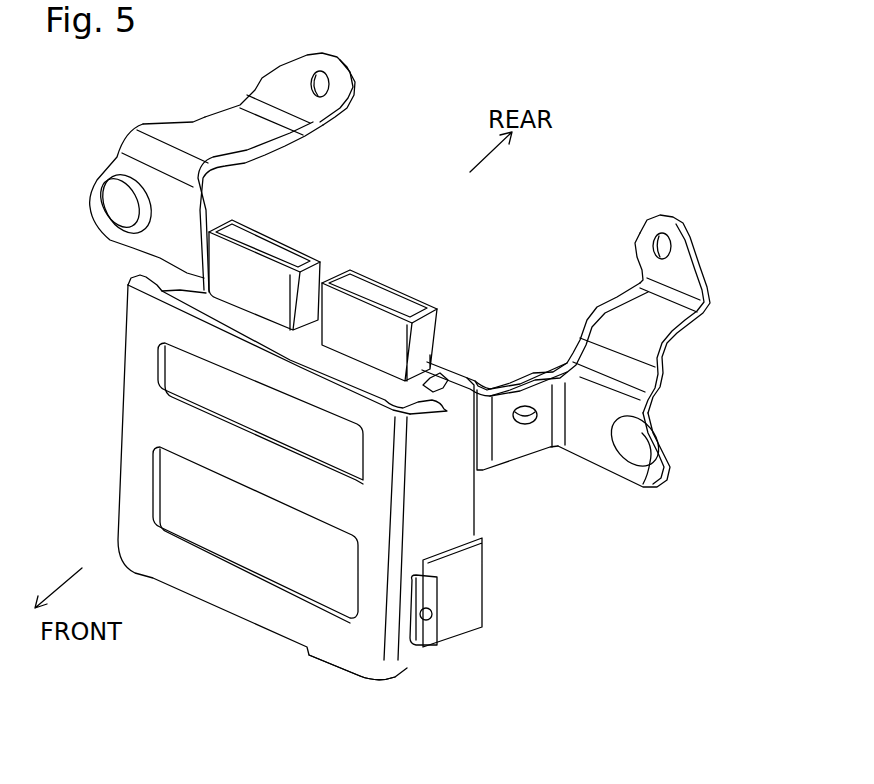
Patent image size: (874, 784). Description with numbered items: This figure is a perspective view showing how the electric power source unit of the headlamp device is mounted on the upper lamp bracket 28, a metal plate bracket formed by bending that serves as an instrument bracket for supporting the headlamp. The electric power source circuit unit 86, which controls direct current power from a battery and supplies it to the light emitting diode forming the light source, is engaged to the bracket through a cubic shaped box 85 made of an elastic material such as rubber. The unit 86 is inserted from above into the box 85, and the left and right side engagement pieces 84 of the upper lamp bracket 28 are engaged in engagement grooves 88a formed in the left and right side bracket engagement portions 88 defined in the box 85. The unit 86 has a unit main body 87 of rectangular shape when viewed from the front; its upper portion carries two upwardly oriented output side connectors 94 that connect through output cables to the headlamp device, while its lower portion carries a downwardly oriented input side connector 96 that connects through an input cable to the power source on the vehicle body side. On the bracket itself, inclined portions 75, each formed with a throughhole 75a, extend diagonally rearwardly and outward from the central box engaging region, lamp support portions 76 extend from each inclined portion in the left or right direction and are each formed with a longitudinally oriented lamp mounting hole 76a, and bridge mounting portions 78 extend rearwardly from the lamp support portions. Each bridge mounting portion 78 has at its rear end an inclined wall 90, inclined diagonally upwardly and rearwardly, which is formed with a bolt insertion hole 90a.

The upper lamp bracket 28 is at (393, 284).
The inclined portion 75 is at (520, 452).
The throughhole 75a is at (525, 408).
The lamp support portion 76 is at (150, 247).
The lamp mounting hole 76a is at (112, 222).
The bridge mounting portion 78 is at (205, 132).
The engagement piece 84 is at (418, 648).
The box 85 is at (247, 612).
The electric power source circuit unit 86 is at (427, 387).
The unit main body 87 is at (177, 488).
The bracket engagement portion 88 is at (467, 590).
The engagement groove 88a is at (427, 620).
The inclined wall 90 is at (290, 78).
The bolt insertion hole 90a is at (330, 86).
The output side connector 94 is at (358, 268).
The input side connector 96 is at (373, 680).